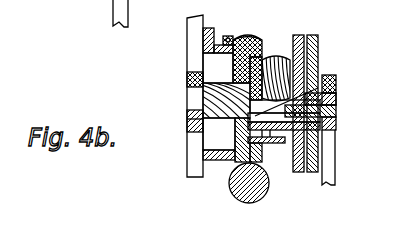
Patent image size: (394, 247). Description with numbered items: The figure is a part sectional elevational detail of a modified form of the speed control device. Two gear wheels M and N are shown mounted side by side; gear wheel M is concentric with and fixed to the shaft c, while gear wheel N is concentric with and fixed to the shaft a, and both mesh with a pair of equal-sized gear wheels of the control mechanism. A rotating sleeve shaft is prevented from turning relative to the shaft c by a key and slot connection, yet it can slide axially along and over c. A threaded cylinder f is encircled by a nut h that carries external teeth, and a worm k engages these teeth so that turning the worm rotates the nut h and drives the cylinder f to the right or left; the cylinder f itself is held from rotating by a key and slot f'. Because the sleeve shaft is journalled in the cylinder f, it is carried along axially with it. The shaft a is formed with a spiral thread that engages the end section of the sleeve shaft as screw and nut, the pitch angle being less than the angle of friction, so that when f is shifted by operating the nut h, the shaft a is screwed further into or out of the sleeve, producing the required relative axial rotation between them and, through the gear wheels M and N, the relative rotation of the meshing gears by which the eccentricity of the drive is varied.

The key and slot f' is at (178, 100).
The worm body g is at (218, 164).
The shaft a is at (320, 70).
The gear wheel M is at (297, 38).
The gear wheel N is at (318, 48).
The shaft c is at (337, 78).
The worm k is at (238, 160).
The encircling nut h is at (265, 190).
The threaded cylinder f is at (283, 169).